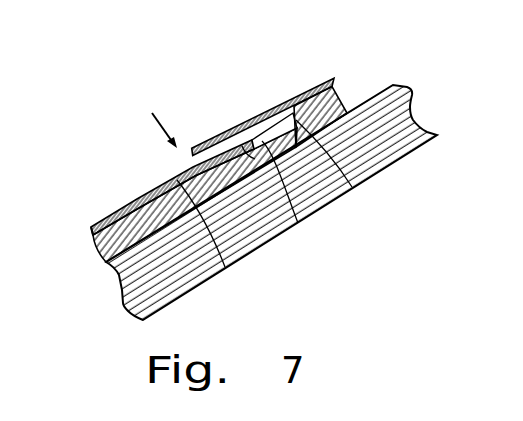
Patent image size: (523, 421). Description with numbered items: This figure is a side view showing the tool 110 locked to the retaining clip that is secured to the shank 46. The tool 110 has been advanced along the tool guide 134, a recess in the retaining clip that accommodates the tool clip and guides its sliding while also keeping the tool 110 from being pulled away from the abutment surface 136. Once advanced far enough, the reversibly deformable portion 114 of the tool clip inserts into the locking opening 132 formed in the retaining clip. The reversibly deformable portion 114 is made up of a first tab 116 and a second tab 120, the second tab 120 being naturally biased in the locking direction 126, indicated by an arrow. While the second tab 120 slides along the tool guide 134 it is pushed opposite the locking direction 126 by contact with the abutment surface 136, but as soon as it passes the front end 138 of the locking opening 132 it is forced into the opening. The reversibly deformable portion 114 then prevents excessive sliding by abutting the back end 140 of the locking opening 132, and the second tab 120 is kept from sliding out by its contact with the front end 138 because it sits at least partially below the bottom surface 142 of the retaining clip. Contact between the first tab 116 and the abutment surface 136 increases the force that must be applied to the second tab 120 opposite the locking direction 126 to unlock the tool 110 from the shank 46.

The shank 46 is at (412, 139).
The tool 110 is at (105, 226).
The reversibly deformable portion 114 is at (237, 111).
The first tab 116 is at (201, 146).
The second tab 120 is at (280, 107).
The locking direction 126 is at (160, 135).
The locking opening 132 is at (352, 187).
The tool guide 134 is at (349, 91).
The abutment surface 136 is at (153, 197).
The front end 138 is at (298, 223).
The back end 140 is at (305, 102).
The bottom surface 142 is at (225, 267).